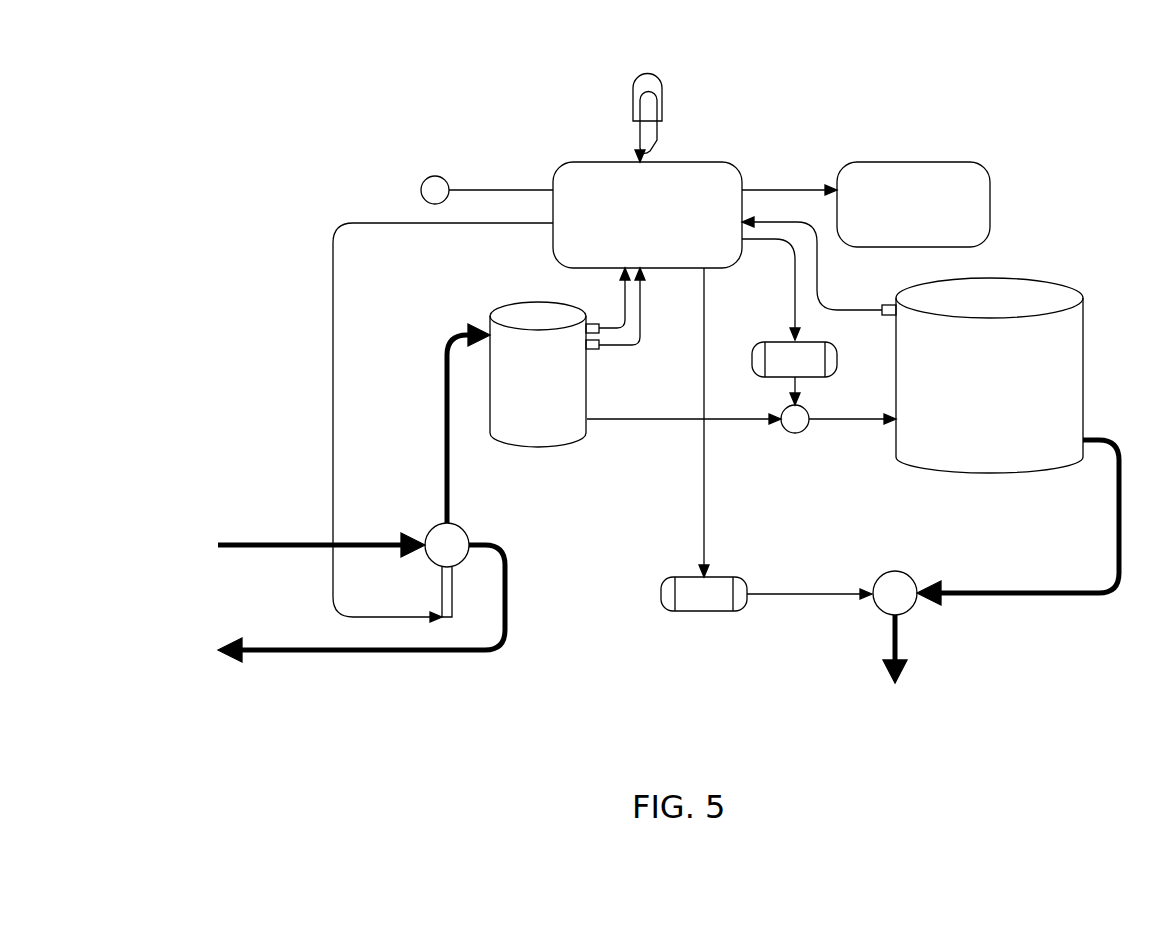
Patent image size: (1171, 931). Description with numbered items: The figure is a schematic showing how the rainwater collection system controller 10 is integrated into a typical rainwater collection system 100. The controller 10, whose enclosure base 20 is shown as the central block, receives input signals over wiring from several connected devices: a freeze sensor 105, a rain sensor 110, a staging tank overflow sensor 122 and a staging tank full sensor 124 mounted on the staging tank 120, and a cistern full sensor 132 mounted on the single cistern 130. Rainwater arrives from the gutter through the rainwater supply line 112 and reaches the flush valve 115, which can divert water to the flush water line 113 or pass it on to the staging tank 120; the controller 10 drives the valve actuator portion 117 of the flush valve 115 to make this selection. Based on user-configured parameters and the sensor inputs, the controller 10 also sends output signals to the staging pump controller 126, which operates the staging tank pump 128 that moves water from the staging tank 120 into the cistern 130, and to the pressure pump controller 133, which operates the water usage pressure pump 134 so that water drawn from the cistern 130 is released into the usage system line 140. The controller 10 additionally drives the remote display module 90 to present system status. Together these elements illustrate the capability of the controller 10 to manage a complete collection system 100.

The rainwater collection system controller 10 is at (790, 168).
The enclosure base 20 is at (710, 160).
The remote display module 90 is at (960, 160).
The rainwater collection system 100 is at (368, 243).
The freeze sensor 105 is at (436, 176).
The rain sensor 110 is at (656, 82).
The rainwater supply line 112 is at (360, 543).
The flush water line 113 is at (366, 653).
The flush valve 115 is at (506, 470).
The valve actuator portion 117 is at (466, 532).
The staging tank 120 is at (527, 322).
The staging tank overflow sensor 122 is at (590, 318).
The staging tank full sensor 124 is at (602, 352).
The staging pump controller 126 is at (832, 360).
The staging tank pump 128 is at (790, 430).
The cistern 130 is at (1030, 298).
The cistern full sensor 132 is at (880, 303).
The pressure pump controller 133 is at (705, 600).
The water usage pressure pump 134 is at (905, 605).
The usage system line 140 is at (900, 645).